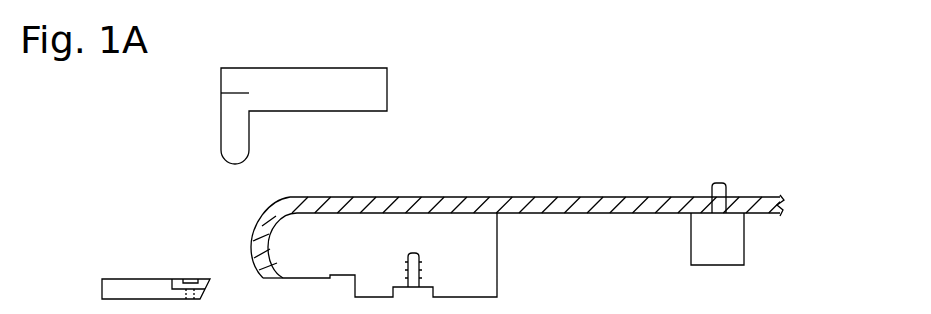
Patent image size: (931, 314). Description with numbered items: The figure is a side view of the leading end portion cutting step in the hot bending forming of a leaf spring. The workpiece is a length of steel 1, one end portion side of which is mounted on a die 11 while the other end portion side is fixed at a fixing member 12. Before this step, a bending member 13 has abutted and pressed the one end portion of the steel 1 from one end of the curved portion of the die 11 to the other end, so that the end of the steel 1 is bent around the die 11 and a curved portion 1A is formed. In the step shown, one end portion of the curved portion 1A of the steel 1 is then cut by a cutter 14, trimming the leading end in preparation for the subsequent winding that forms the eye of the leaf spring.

The steel 1 is at (600, 209).
The curved portion 1A is at (259, 241).
The die 11 is at (485, 266).
The fixing member 12 is at (733, 249).
The bending member 13 is at (376, 96).
The cutter 14 is at (133, 294).